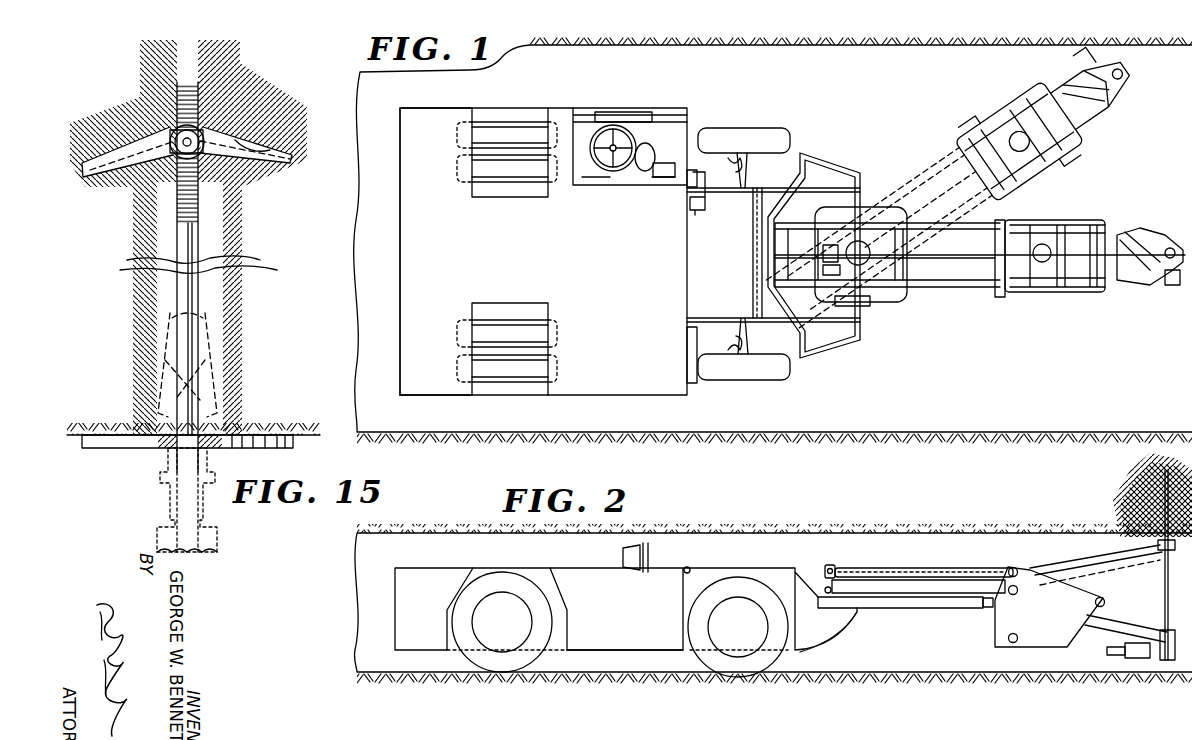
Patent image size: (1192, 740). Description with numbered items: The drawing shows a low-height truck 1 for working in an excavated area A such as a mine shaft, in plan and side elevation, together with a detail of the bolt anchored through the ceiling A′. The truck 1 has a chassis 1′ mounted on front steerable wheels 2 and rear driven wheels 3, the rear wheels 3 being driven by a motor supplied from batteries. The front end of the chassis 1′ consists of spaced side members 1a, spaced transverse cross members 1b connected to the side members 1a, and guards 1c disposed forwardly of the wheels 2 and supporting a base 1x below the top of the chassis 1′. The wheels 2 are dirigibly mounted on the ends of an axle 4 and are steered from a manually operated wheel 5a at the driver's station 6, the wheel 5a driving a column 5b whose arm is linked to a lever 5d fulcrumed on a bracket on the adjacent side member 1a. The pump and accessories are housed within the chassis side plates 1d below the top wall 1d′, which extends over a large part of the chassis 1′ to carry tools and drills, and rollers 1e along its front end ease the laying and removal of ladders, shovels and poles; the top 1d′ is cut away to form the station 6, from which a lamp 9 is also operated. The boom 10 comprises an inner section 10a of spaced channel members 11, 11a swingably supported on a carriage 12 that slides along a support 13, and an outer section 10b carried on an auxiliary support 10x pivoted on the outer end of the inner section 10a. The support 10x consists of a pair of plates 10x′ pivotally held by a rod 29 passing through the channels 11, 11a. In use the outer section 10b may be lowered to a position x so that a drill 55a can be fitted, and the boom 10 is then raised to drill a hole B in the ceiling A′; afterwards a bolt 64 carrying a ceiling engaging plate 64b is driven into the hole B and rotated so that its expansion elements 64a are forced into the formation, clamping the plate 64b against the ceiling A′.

In FIG. 1, the truck 1 is at (660, 387).
In FIG. 2, the truck 1 is at (422, 613).
In FIG. 2, the chassis 1′ is at (580, 637).
In FIG. 1, the side members 1a is at (743, 192).
In FIG. 1, the transverse cross members 1b is at (752, 257).
In FIG. 1, the guards 1c is at (847, 167).
In FIG. 1, the chassis side plates 1d is at (398, 397).
In FIG. 1, the top wall 1d′ is at (436, 251).
In FIG. 1, the rollers 1e is at (687, 355).
In FIG. 2, the base 1x is at (843, 610).
In FIG. 1, the front steerable wheels 2 is at (755, 140).
In FIG. 2, the front steerable wheels 2 is at (740, 583).
In FIG. 1, the rear driven wheels 3 is at (511, 135).
In FIG. 2, the rear driven wheels 3 is at (502, 583).
In FIG. 1, the axle 4 is at (742, 180).
In FIG. 1, the steering wheel 5a is at (607, 177).
In FIG. 1, the column 5b is at (627, 173).
In FIG. 1, the lever 5d is at (687, 198).
In FIG. 1, the driver's station 6 is at (678, 146).
In FIG. 2, the lamp 9 is at (623, 557).
In FIG. 1, the boom 10 is at (890, 287).
In FIG. 1, the inner boom section 10a is at (903, 222).
In FIG. 1, the outer boom section 10b is at (1133, 317).
In FIG. 2, the auxiliary support 10x is at (1038, 669).
In FIG. 1, the plates 10x′ is at (1070, 223).
In FIG. 1, the channel member 11 is at (950, 287).
In FIG. 2, the channel member 11 is at (915, 585).
In FIG. 1, the channel member 11a is at (980, 217).
In FIG. 1, the carriage 12 is at (887, 300).
In FIG. 2, the support 13 is at (920, 610).
In FIG. 2, the rod 29 is at (1018, 572).
In FIG. 2, the drill 55a is at (1165, 607).
In FIG. 15, the bolt 64 is at (203, 400).
In FIG. 15, the expansion elements 64a is at (138, 158).
In FIG. 15, the ceiling engaging plate 64b is at (113, 447).
In FIG. 2, the position of outer boom section x is at (1098, 630).
In FIG. 2, the excavated area A is at (878, 672).
In FIG. 2, the ceiling A′ is at (785, 533).
In FIG. 15, the ceiling A′ is at (83, 420).
In FIG. 15, the hole B is at (237, 312).